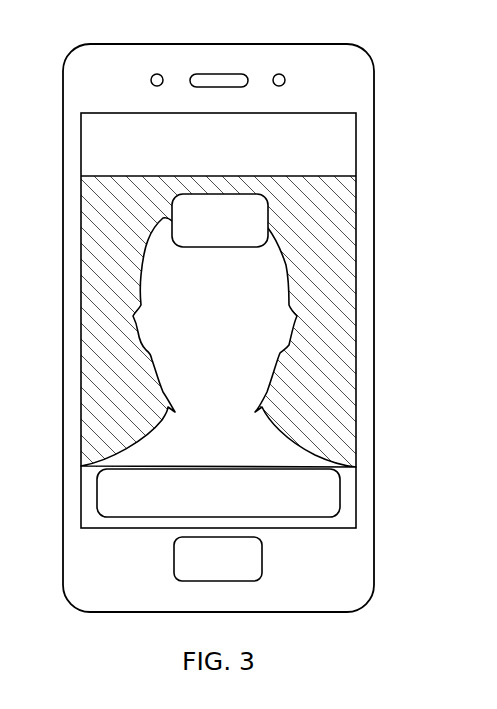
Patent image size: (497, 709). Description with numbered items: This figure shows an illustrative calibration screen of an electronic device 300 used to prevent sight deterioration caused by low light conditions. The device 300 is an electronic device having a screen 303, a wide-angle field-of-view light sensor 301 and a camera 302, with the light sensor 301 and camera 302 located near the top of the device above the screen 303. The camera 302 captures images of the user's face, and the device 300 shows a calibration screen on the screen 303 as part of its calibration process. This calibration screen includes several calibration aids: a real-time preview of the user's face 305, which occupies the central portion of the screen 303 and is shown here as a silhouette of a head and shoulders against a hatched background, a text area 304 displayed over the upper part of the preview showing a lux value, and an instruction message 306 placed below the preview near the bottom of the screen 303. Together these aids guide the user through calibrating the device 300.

The device 300 is at (70, 58).
The light sensor 301 is at (151, 77).
The camera 302 is at (285, 79).
The screen 303 is at (356, 147).
The text area 304 is at (268, 218).
The real-time preview of the user's face 305 is at (297, 453).
The instruction message 306 is at (340, 489).